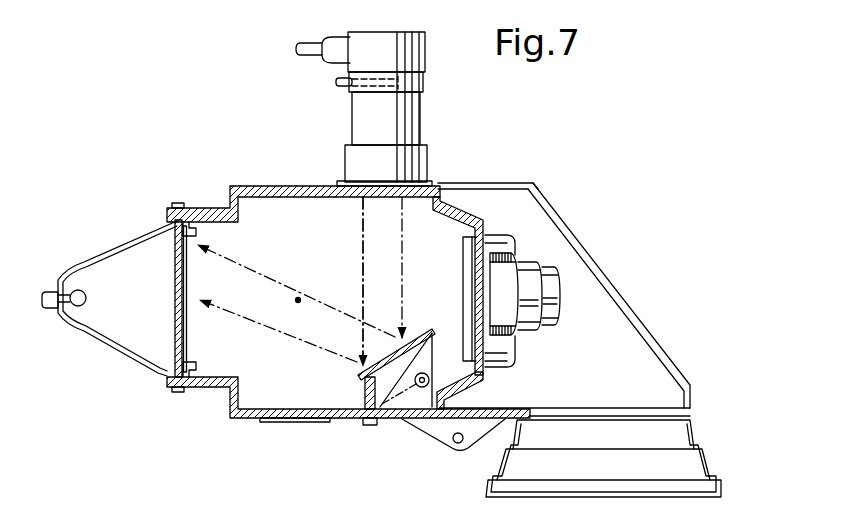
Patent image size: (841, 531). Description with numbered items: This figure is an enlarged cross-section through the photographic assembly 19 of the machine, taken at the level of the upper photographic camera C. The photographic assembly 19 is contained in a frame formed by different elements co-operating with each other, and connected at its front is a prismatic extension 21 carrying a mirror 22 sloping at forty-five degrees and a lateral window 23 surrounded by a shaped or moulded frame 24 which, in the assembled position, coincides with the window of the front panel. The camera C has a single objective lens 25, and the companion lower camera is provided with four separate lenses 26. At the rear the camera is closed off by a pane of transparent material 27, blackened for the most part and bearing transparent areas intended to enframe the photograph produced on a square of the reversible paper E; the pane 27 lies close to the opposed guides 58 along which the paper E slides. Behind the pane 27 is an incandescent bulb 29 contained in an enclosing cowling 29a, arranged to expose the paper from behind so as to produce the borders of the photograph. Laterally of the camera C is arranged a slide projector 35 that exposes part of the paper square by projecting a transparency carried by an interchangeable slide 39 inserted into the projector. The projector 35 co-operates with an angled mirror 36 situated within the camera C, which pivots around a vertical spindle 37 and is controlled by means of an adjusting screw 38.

The photographic assembly 19 is at (283, 184).
The prismatic extension 21 is at (494, 183).
The mirror 22 is at (606, 269).
The lateral window 23 is at (598, 408).
The shaped frame 24 is at (522, 431).
The objective lens 25 is at (539, 339).
The separate lenses 26 is at (502, 233).
The transparent pane 27 is at (176, 329).
The incandescent bulb 29 is at (87, 298).
The enclosing cowling 29a is at (110, 250).
The slide projector 35 is at (426, 120).
The angled mirror 36 is at (432, 334).
The vertical spindle 37 is at (429, 374).
The adjusting screw 38 is at (365, 388).
The interchangeable slide 39 is at (338, 82).
The guide 58 is at (196, 366).
The reversible paper E is at (187, 323).
The photographic camera C is at (298, 313).